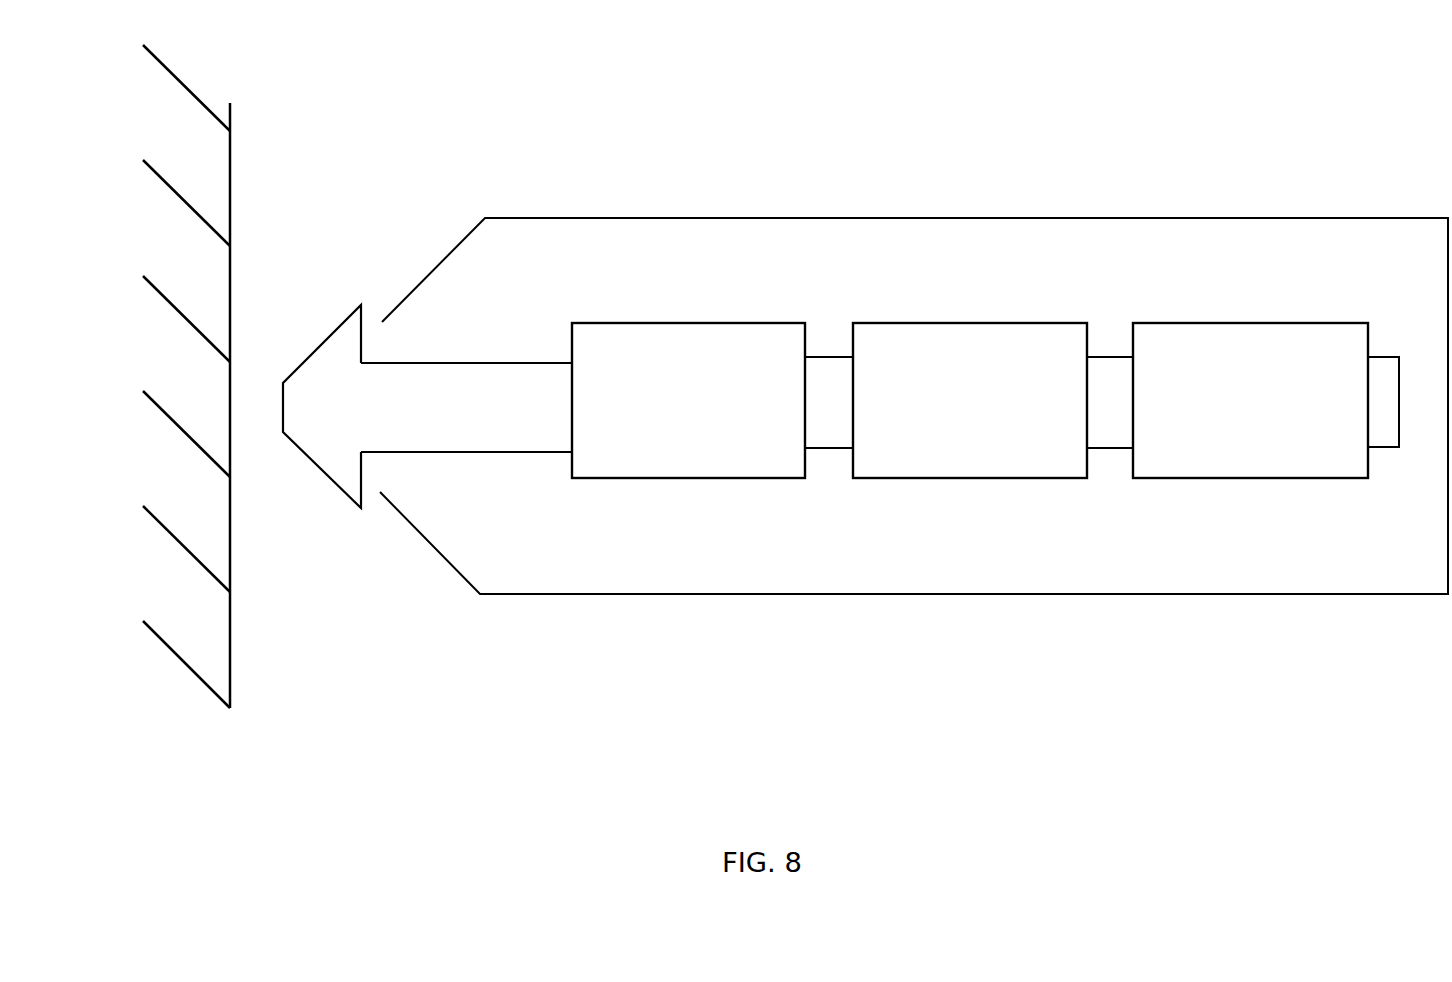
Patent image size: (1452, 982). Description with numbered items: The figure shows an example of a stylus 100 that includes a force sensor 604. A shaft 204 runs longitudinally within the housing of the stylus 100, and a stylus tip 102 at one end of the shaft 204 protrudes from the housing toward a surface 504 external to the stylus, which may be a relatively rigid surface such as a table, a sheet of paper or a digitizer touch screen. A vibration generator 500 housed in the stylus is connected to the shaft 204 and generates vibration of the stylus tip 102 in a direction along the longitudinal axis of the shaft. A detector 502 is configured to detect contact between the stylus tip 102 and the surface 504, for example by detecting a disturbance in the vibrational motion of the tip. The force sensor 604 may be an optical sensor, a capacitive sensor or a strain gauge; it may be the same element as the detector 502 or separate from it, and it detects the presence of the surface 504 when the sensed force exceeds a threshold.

The stylus 100 is at (698, 180).
The stylus tip 102 is at (312, 350).
The shaft 204 is at (463, 415).
The vibration generator 500 is at (667, 442).
The detector 502 is at (949, 426).
The surface 504 is at (82, 356).
The force sensor 604 is at (1229, 427).